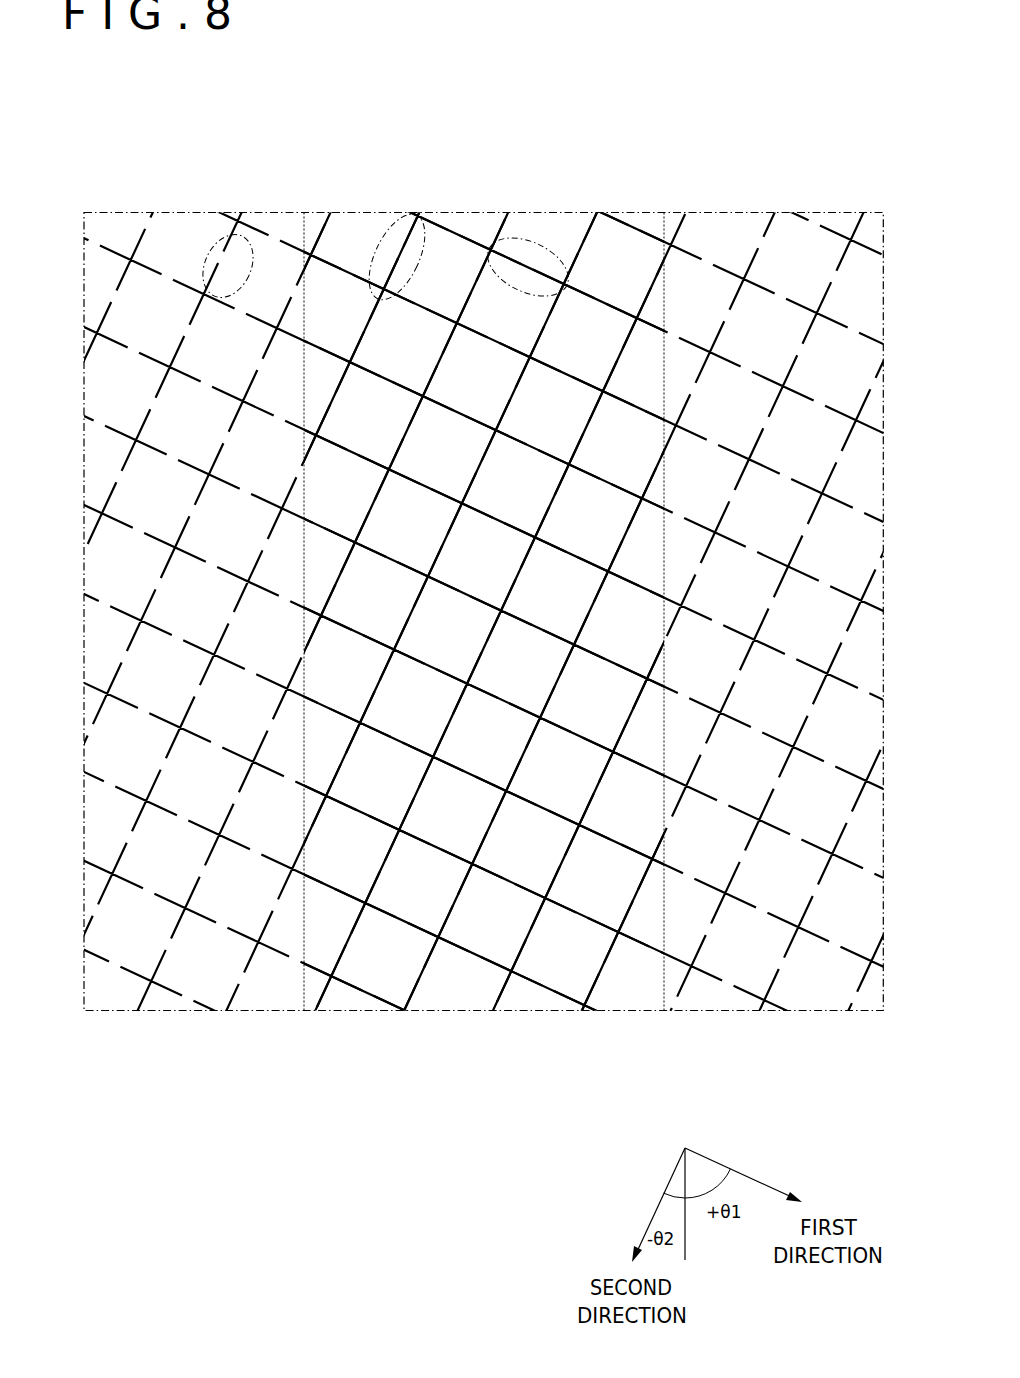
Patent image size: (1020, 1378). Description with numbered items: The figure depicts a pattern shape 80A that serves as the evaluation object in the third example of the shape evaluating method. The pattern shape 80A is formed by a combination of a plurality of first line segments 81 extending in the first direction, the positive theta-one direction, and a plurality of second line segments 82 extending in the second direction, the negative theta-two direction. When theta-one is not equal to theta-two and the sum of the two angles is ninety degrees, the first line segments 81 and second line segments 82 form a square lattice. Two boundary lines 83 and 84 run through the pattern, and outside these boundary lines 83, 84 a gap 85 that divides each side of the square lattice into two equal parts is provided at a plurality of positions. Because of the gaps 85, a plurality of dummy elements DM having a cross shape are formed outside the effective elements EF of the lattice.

The pattern shape 80A is at (156, 184).
The first line segments 81 is at (386, 232).
The second line segments 82 is at (527, 238).
The boundary line 83 is at (303, 975).
The boundary line 84 is at (663, 972).
The gap 85 is at (248, 238).
The effective elements EF is at (600, 212).
The dummy elements DM is at (722, 275).